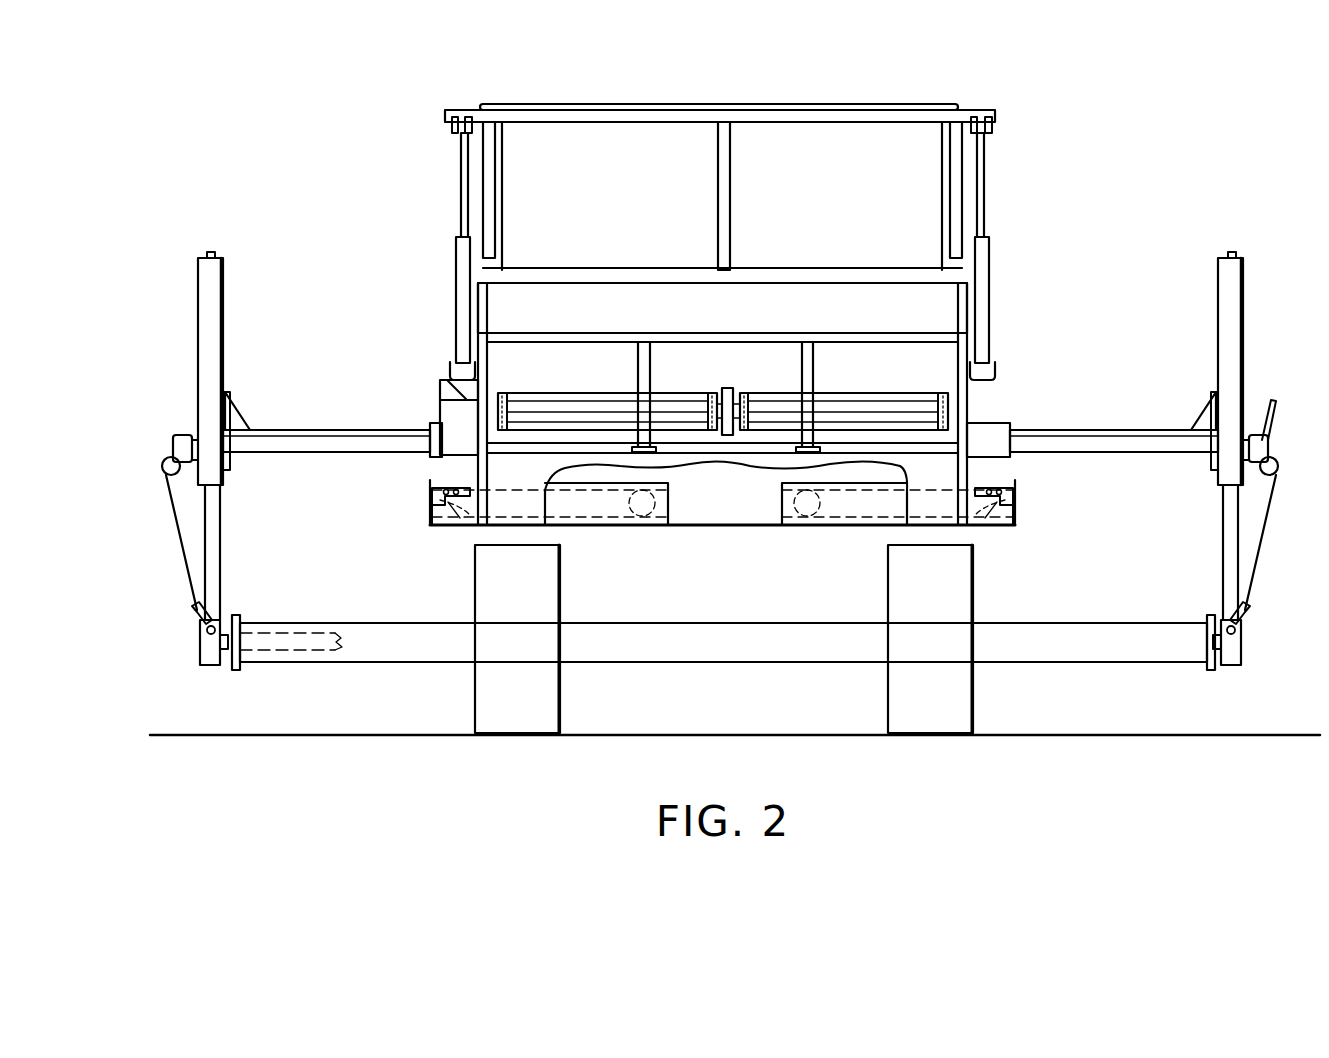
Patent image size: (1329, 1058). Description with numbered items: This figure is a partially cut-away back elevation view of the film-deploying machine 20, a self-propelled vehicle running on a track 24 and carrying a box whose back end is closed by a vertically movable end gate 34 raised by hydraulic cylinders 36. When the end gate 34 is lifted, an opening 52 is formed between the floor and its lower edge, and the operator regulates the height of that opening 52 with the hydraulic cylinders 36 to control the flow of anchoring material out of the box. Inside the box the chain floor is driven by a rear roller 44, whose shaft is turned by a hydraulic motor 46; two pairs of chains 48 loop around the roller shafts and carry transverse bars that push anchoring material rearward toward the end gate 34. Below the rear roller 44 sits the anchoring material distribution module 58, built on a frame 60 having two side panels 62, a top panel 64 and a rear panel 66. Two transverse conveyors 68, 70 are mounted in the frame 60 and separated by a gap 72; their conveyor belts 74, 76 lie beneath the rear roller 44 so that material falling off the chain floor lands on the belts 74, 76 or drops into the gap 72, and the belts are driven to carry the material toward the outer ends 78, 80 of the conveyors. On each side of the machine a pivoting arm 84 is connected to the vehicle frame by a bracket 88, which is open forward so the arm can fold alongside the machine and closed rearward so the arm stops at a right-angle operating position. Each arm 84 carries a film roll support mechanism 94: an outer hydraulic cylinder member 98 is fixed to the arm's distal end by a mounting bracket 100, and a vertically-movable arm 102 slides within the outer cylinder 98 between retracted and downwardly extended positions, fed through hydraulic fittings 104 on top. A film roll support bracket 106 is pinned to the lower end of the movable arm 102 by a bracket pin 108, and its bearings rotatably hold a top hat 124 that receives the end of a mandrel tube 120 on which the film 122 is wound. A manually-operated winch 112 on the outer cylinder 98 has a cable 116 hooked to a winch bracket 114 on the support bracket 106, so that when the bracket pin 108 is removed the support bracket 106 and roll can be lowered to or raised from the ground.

The film-deploying machine 20 is at (1018, 98).
The track 24 is at (524, 712).
The end gate 34 is at (806, 116).
The hydraulic cylinders 36 is at (458, 180).
The rear roller 44 is at (905, 355).
The hydraulic motor 46 is at (440, 385).
The chains 48 is at (950, 411).
The opening 52 is at (930, 325).
The anchoring material distribution module 58 is at (407, 341).
The frame 60 is at (503, 335).
The side panels 62 is at (942, 398).
The top panel 64 is at (948, 295).
The rear panel 66 is at (744, 472).
The conveyor 68 is at (430, 527).
The conveyor 70 is at (1017, 530).
The gap 72 is at (704, 500).
The conveyor belt 74 is at (856, 527).
The conveyor belt 76 is at (610, 527).
The outer end 78 is at (1012, 506).
The outer end 80 is at (430, 514).
The pivoting arms 84 is at (320, 448).
The bracket 88 is at (420, 453).
The film roll support mechanism 94 is at (178, 374).
The outer hydraulic cylinder member 98 is at (224, 290).
The mounting bracket 100 is at (240, 420).
The vertically-movable arm 102 is at (221, 532).
The hydraulic fittings 104 is at (211, 252).
The film roll support bracket 106 is at (208, 655).
The bracket pin 108 is at (206, 632).
The winch 112 is at (165, 458).
The winch bracket 114 is at (194, 612).
The cable 116 is at (174, 526).
The mandrel tube 120 is at (296, 657).
The film 122 is at (371, 663).
The top hat 124 is at (231, 652).